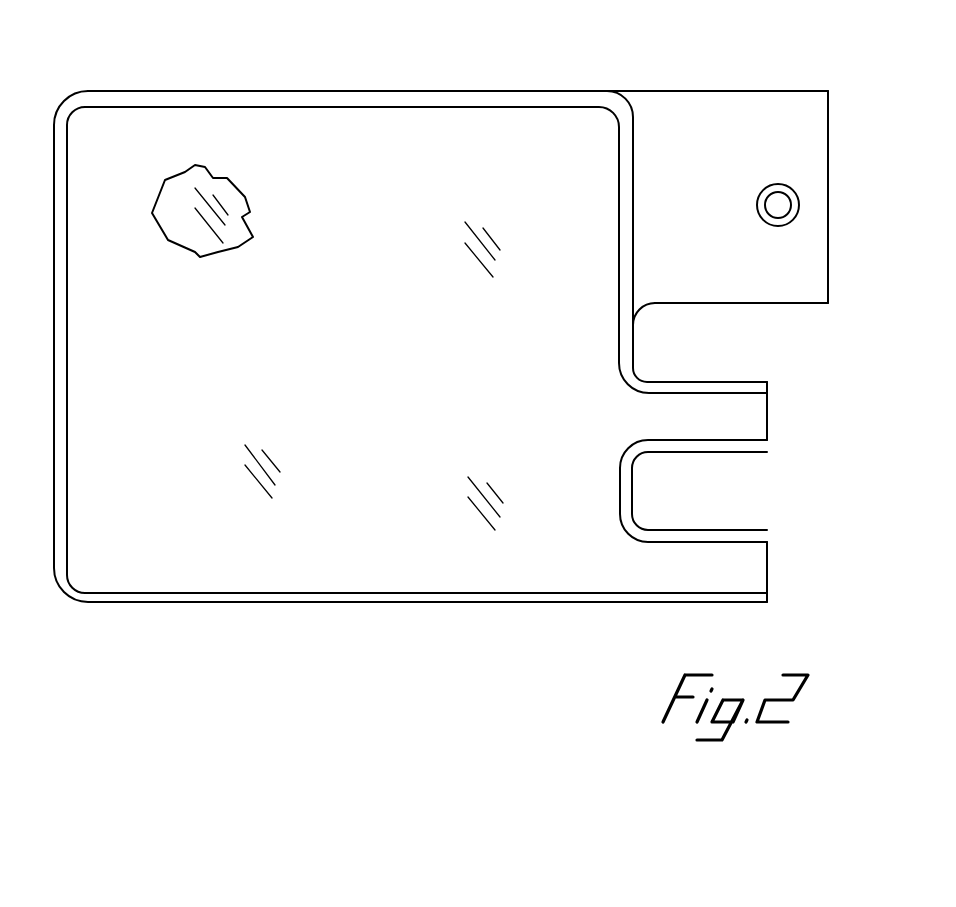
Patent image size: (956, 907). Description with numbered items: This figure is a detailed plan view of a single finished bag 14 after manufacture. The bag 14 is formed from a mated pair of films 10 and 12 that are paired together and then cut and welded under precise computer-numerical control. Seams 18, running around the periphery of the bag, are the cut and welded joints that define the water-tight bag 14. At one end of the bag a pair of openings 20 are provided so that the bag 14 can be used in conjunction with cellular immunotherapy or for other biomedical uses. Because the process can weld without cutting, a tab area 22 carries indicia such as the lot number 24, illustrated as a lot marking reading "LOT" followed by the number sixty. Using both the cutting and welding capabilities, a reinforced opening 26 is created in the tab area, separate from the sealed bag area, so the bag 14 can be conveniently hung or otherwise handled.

The film 10 is at (190, 227).
The film 12 is at (326, 196).
The bag 14 is at (144, 82).
The seams 18 is at (343, 102).
The openings 20 is at (771, 440).
The tab area 22 is at (818, 108).
The lot number 24 is at (671, 105).
The reinforced opening 26 is at (793, 195).